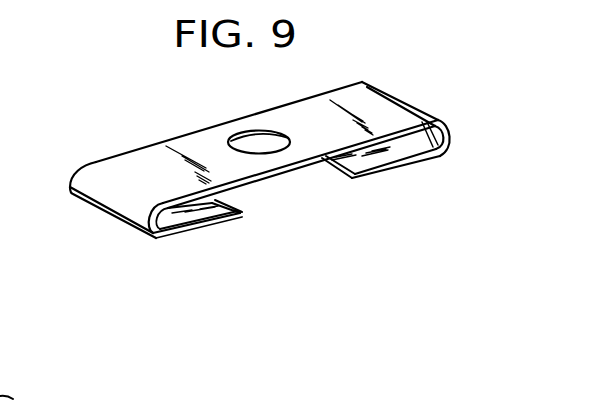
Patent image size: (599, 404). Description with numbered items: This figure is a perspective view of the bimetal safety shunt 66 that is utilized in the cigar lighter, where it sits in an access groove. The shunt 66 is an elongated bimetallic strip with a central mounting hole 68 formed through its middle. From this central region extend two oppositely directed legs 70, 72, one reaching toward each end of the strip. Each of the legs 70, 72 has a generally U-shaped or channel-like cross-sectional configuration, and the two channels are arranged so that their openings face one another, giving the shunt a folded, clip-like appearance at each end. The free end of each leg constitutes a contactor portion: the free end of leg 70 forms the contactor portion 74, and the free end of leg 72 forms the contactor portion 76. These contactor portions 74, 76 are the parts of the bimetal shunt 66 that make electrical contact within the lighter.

The bimetal safety shunt 66 is at (166, 122).
The central mounting hole 68 is at (260, 150).
The leg 70 is at (112, 168).
The leg 72 is at (397, 113).
The contactor portion 74 is at (222, 217).
The contactor portion 76 is at (366, 165).